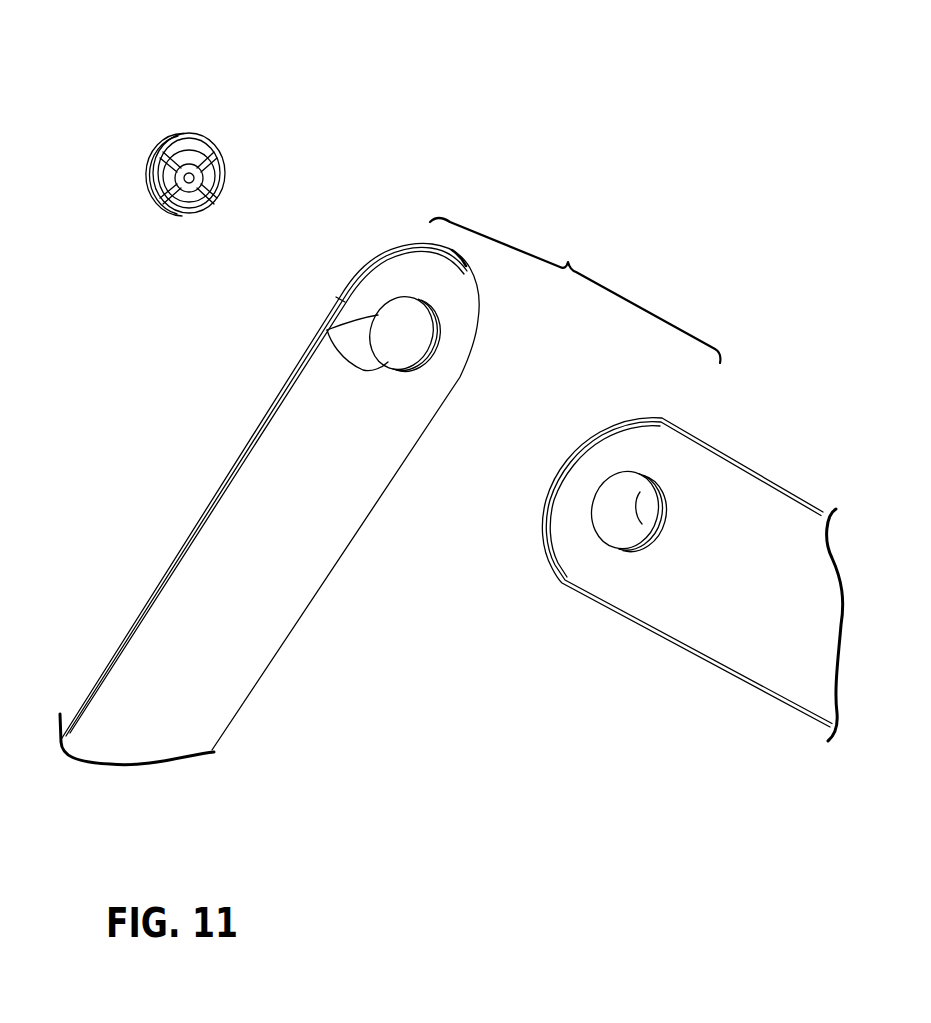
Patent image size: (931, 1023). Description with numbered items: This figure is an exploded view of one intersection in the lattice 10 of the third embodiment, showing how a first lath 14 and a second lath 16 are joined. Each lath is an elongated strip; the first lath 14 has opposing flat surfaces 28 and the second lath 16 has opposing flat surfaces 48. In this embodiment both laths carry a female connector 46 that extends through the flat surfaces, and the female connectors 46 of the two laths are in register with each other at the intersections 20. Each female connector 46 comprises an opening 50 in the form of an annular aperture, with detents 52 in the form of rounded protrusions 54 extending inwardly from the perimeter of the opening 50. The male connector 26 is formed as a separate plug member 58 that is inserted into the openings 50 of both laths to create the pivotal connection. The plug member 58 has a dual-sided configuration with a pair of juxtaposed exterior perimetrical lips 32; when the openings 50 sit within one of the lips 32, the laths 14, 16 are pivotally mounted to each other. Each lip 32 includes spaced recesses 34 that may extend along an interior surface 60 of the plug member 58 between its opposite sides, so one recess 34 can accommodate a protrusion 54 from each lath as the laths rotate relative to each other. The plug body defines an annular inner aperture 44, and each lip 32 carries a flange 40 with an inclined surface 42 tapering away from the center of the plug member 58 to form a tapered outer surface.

The lattice 10 is at (289, 24).
The first lath 14 is at (778, 482).
The second lath 16 is at (210, 488).
The intersections 20 is at (575, 290).
The male connector 26 is at (196, 165).
The flat surfaces 28 is at (722, 622).
The lip 32 is at (160, 173).
The recesses 34 is at (158, 160).
The flange 40 is at (204, 124).
The inclined surface 42 is at (160, 197).
The annular inner aperture 44 is at (198, 177).
The female connector 46 is at (408, 290).
The flat surfaces 48 is at (322, 500).
The opening 50 is at (403, 330).
The detents 52 is at (432, 346).
The rounded protrusions 54 is at (327, 330).
The plug member 58 is at (211, 142).
The interior surface 60 is at (190, 194).